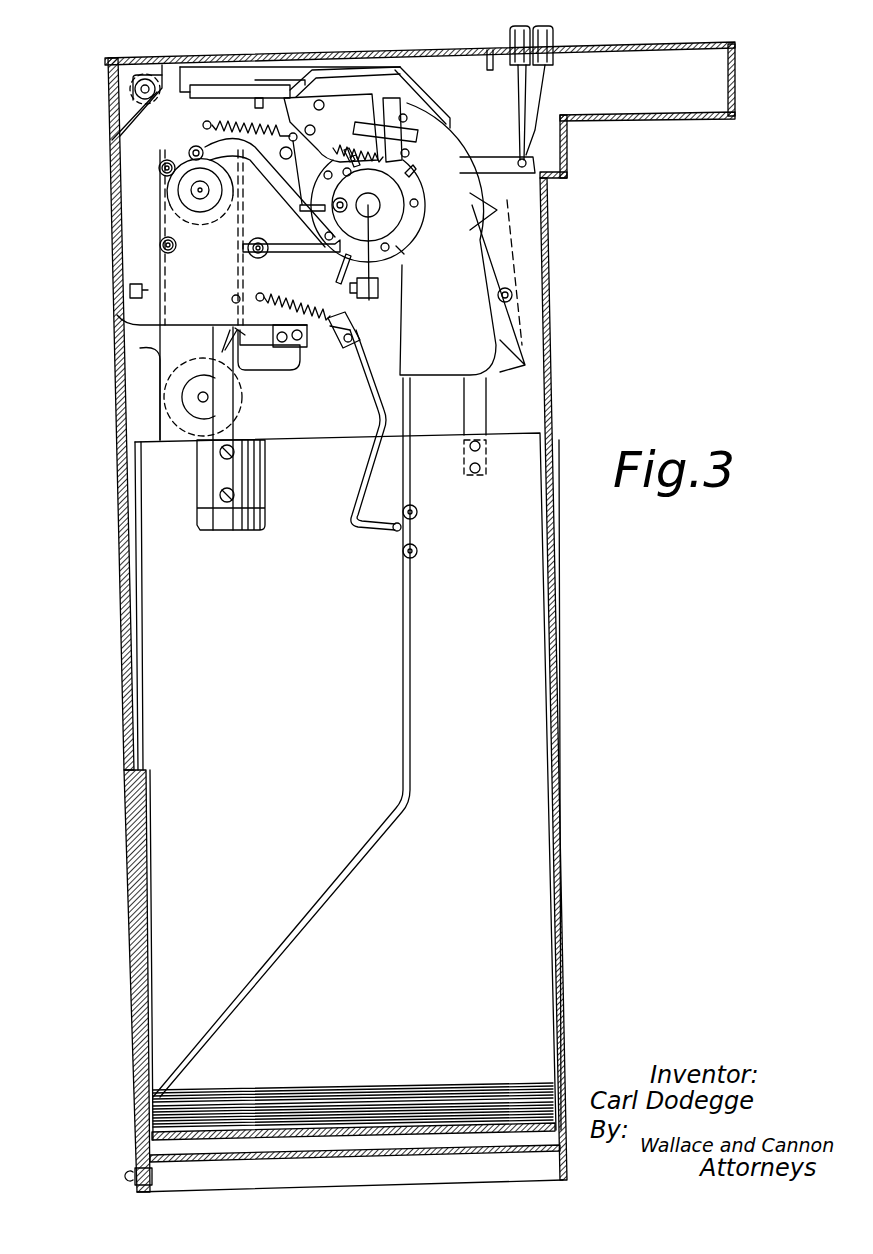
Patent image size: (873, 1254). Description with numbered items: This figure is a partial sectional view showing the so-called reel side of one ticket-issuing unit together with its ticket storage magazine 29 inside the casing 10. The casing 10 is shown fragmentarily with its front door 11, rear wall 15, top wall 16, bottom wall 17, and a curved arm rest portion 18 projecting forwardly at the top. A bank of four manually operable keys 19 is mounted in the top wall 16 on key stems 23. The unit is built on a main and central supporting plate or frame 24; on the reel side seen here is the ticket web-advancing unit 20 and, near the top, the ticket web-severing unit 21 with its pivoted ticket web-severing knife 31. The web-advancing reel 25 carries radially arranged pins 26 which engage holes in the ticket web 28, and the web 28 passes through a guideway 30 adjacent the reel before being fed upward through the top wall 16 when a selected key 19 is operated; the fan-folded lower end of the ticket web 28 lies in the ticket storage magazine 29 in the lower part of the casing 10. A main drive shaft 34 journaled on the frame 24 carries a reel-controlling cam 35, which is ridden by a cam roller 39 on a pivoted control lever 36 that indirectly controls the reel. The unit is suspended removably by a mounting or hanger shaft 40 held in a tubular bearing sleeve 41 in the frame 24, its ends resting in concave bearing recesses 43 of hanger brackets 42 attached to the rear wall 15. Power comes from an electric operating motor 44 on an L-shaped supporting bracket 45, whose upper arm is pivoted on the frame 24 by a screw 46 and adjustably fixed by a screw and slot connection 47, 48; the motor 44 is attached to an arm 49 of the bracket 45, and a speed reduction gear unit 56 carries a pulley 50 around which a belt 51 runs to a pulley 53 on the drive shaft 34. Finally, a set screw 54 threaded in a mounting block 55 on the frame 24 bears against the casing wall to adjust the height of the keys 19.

The casing 10 is at (566, 687).
The door 11 is at (556, 585).
The rear wall 15 is at (124, 690).
The top wall 16 is at (430, 56).
The bottom wall 17 is at (412, 1152).
The curved arm rest portion 18 is at (680, 36).
The manually operable keys 19 is at (552, 38).
The ticket web-advancing unit 20 is at (415, 192).
The ticket web-severing unit 21 is at (292, 80).
The key stems 23 is at (545, 97).
The main supporting plate or frame 24 is at (180, 143).
The web-advancing reel 25 is at (412, 232).
The pins 26 is at (340, 272).
The ticket web 28 is at (335, 886).
The ticket storage magazine 29 is at (523, 795).
The guideway 30 is at (455, 287).
The pivoted ticket web-severing knife 31 is at (312, 78).
The main drive shaft 34 is at (200, 192).
The reel-controlling cam 35 is at (175, 212).
The control lever 36 is at (291, 234).
The cam roller 39 is at (190, 154).
The mounting or hanger shaft 40 is at (150, 82).
The tubular bearing sleeve 41 is at (146, 82).
The mounting or hanger bracket 42 is at (122, 130).
The concave bearing recess 43 is at (125, 107).
The electric operating motor 44 is at (258, 482).
The L-shaped supporting bracket 45 is at (250, 375).
The screw 46 is at (318, 345).
The screw of screw and slot connection 47 is at (275, 325).
The slot of screw and slot connection 48 is at (293, 320).
The arm 49 is at (245, 412).
The pulley 50 is at (190, 397).
The belt 51 is at (140, 348).
The pulley 53 is at (269, 267).
The set screw 54 is at (130, 335).
The screw threaded mounting block 55 is at (128, 292).
The speed reduction gear unit 56 is at (175, 395).